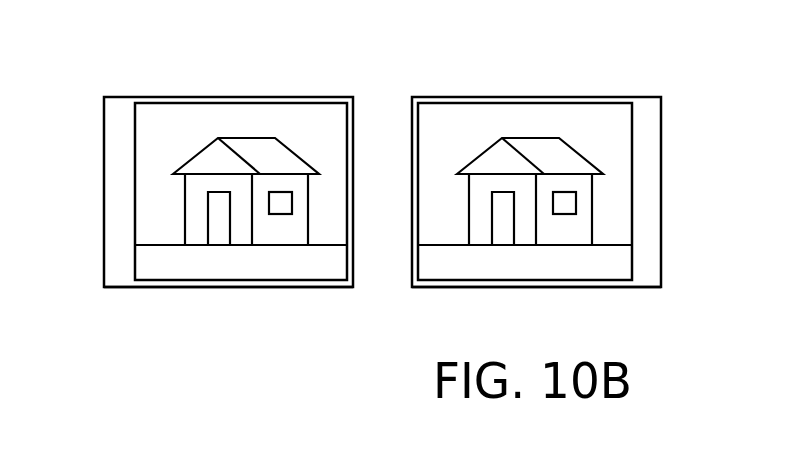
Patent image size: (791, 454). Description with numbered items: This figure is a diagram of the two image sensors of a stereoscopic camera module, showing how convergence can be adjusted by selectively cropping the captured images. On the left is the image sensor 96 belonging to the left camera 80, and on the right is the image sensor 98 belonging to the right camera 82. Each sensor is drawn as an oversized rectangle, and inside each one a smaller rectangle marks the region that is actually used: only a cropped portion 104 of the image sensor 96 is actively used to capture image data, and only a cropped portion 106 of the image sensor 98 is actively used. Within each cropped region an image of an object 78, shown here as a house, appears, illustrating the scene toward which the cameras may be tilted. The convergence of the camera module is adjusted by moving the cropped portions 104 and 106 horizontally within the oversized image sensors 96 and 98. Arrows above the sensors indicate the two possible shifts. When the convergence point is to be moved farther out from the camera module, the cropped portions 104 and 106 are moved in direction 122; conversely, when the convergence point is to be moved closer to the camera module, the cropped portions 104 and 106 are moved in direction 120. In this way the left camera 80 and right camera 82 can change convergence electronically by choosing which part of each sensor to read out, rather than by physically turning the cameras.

The object 78 is at (182, 157).
The left camera 80 is at (120, 22).
The right camera 82 is at (646, 22).
The image sensor 96 is at (270, 287).
The image sensor 98 is at (497, 287).
The cropped portion 104 is at (135, 259).
The cropped portion 106 is at (632, 259).
The direction 120 is at (140, 87).
The direction 122 is at (320, 91).